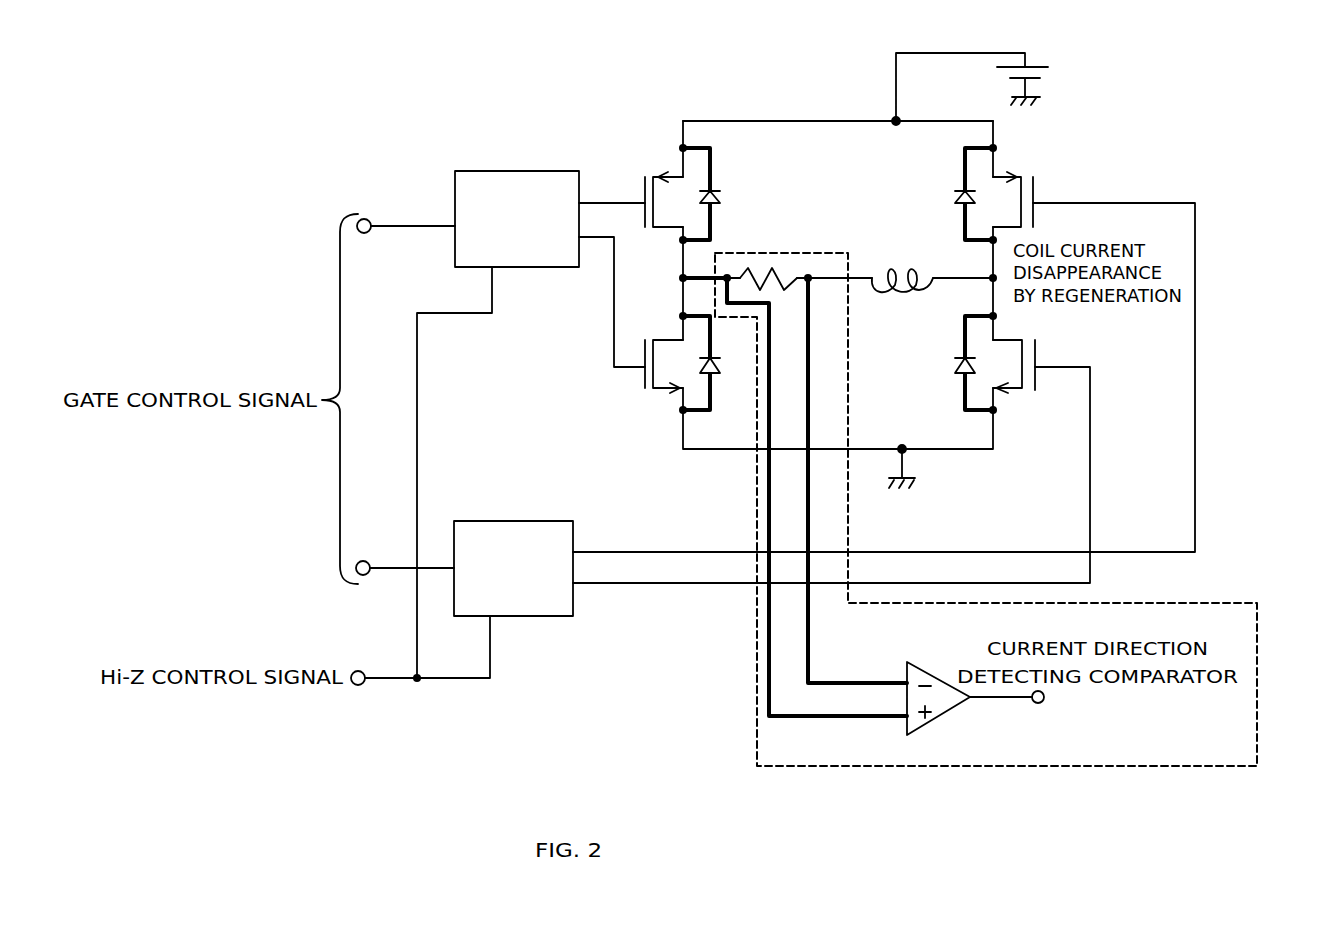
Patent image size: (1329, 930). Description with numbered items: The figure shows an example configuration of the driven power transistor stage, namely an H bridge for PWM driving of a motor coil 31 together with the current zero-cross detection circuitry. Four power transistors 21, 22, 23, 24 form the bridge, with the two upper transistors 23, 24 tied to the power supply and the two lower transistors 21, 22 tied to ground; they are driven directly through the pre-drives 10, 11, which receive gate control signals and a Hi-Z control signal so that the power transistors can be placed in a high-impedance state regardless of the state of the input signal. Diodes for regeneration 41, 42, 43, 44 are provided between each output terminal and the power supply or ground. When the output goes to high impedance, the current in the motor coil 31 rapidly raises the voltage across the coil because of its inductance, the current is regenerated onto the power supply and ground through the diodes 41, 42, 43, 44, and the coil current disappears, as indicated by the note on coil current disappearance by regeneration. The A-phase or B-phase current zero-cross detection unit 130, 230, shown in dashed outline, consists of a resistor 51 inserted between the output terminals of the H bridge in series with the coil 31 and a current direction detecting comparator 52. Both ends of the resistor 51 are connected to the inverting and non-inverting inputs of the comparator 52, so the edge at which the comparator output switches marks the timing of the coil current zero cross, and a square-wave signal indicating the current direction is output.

The pre-drive 10 is at (470, 171).
The pre-drive 11 is at (485, 521).
The power transistor 21 is at (643, 378).
The power transistor 22 is at (1040, 354).
The power transistor 23 is at (643, 182).
The power transistor 24 is at (1038, 190).
The motor coil 31 is at (912, 292).
The diode for regeneration 41 is at (720, 366).
The diode for regeneration 42 is at (948, 368).
The diode for regeneration 43 is at (722, 196).
The diode for regeneration 44 is at (950, 198).
The resistor 51 is at (774, 265).
The current direction detecting comparator 52 is at (915, 662).
The A-phase current zero-cross detection unit 130 is at (990, 509).
The B-phase current zero-cross detection unit 230 is at (1152, 603).